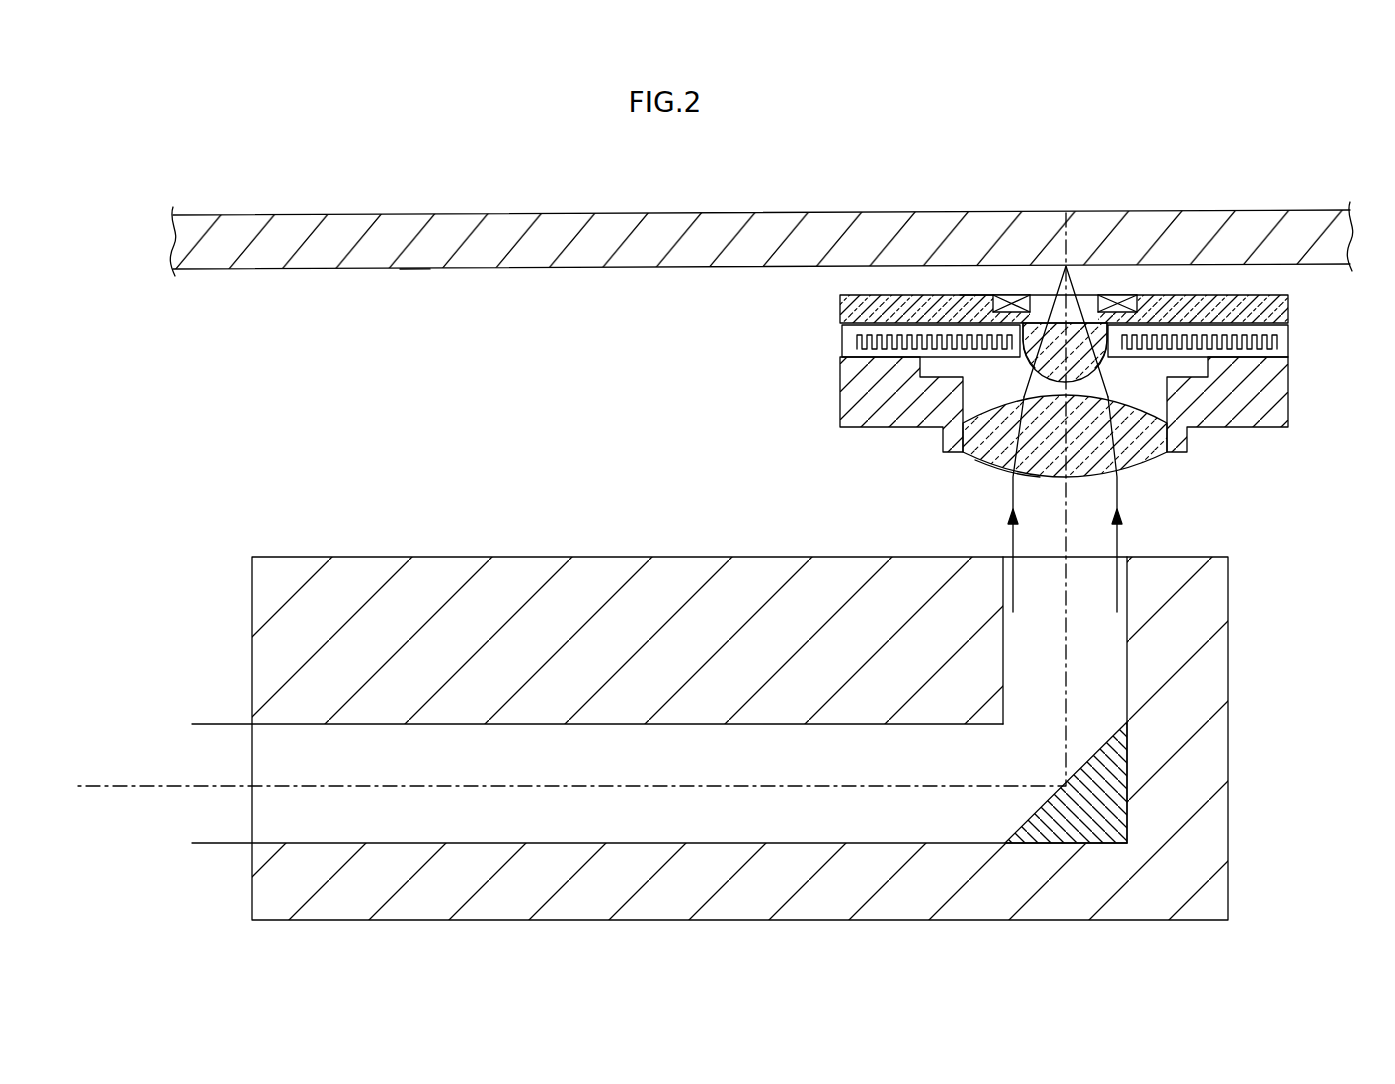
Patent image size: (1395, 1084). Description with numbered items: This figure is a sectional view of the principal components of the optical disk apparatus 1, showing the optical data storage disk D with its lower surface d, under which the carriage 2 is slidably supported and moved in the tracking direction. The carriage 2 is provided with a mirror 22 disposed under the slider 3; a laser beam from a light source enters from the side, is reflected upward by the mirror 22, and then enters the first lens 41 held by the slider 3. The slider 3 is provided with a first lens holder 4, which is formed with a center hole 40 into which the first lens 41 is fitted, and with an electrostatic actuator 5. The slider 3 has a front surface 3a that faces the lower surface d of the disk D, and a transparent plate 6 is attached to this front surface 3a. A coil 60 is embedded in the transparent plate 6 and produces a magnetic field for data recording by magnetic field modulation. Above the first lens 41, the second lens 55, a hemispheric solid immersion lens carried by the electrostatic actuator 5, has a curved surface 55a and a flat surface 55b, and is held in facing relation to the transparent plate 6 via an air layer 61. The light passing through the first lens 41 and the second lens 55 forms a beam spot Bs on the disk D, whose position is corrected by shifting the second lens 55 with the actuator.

The optical disk apparatus 1 is at (527, 480).
The carriage 2 is at (710, 701).
The mirror 22 is at (1037, 810).
The slider 3 is at (1333, 362).
The front surface 3a is at (976, 297).
The first lens holder 4 is at (1306, 411).
The electrostatic actuator 5 is at (829, 354).
The transparent plate 6 is at (1098, 245).
The coil 60 is at (1012, 293).
The air layer 61 is at (1100, 296).
The second lens 55 is at (1066, 282).
The curved surface 55a is at (1108, 358).
The flat surface 55b is at (1035, 358).
The center hole 40 is at (1152, 440).
The first lens 41 is at (990, 466).
The beam spot Bs is at (1080, 320).
The optical data storage disk D is at (1198, 212).
The lower surface d is at (413, 269).